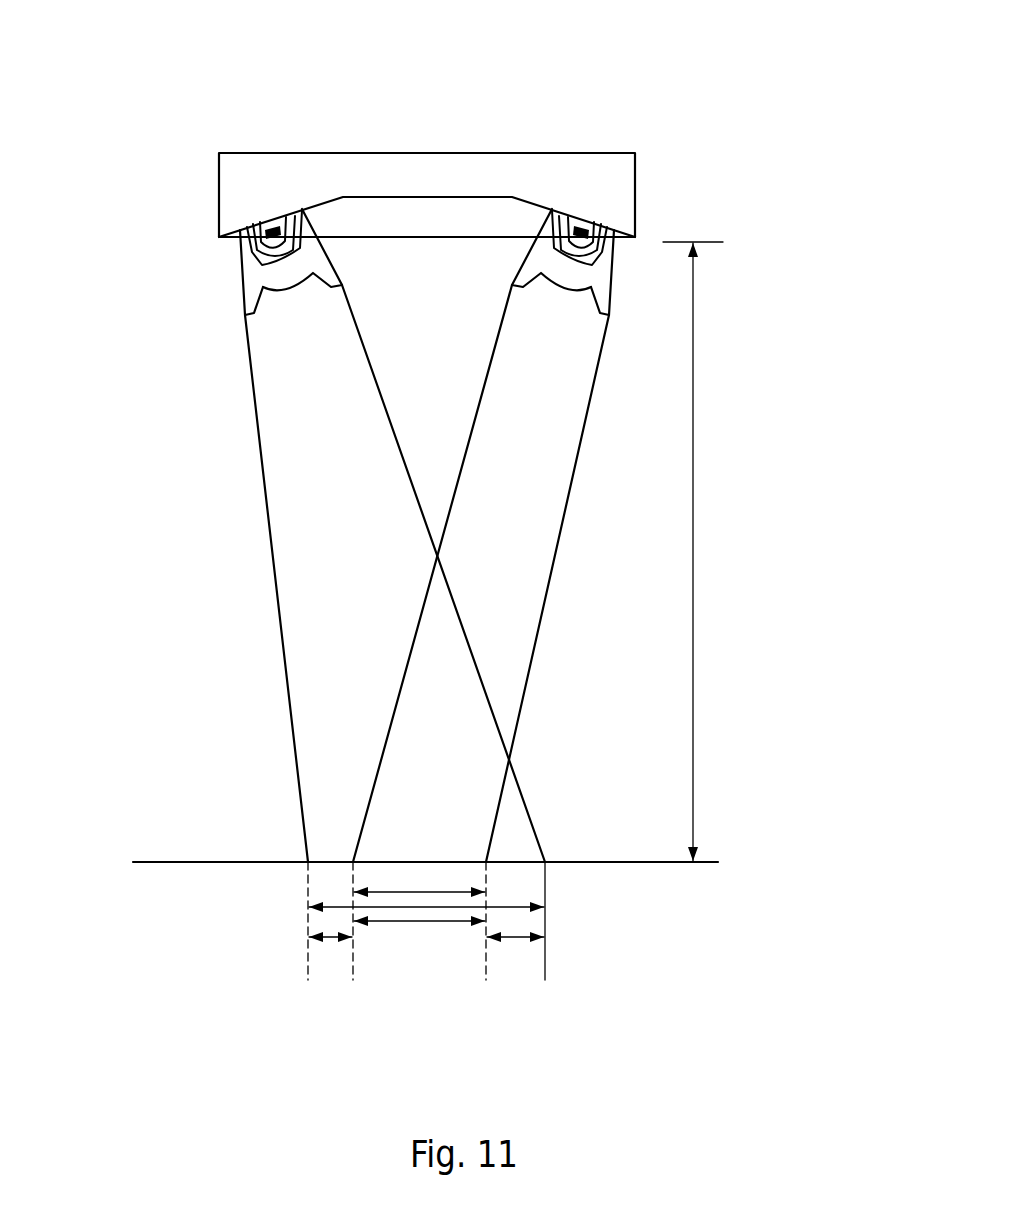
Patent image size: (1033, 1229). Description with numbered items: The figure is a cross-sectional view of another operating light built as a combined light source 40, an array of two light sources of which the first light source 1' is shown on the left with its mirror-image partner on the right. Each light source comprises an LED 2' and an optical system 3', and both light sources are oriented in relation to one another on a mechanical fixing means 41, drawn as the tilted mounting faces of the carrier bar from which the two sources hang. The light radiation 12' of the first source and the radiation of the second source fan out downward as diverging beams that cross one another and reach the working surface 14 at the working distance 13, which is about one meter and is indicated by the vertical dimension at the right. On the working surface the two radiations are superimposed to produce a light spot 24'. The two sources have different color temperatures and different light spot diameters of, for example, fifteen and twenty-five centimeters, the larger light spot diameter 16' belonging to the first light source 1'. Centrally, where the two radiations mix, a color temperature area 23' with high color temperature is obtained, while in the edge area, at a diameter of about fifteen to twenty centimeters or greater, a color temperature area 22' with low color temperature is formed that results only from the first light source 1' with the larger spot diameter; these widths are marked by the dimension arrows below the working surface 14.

The light source 1' is at (353, 200).
The LED 2' is at (229, 193).
The optical system 3' is at (184, 284).
The light radiation 12' is at (256, 588).
The working distance 13 is at (693, 532).
The working surface 14 is at (228, 863).
The light spot diameter 16' is at (426, 976).
The color temperature area 22' is at (414, 1003).
The color temperature area 23' is at (429, 986).
The light spot 24' is at (488, 573).
The combined light source 40 is at (558, 126).
The mechanical fixing means 41 is at (207, 207).